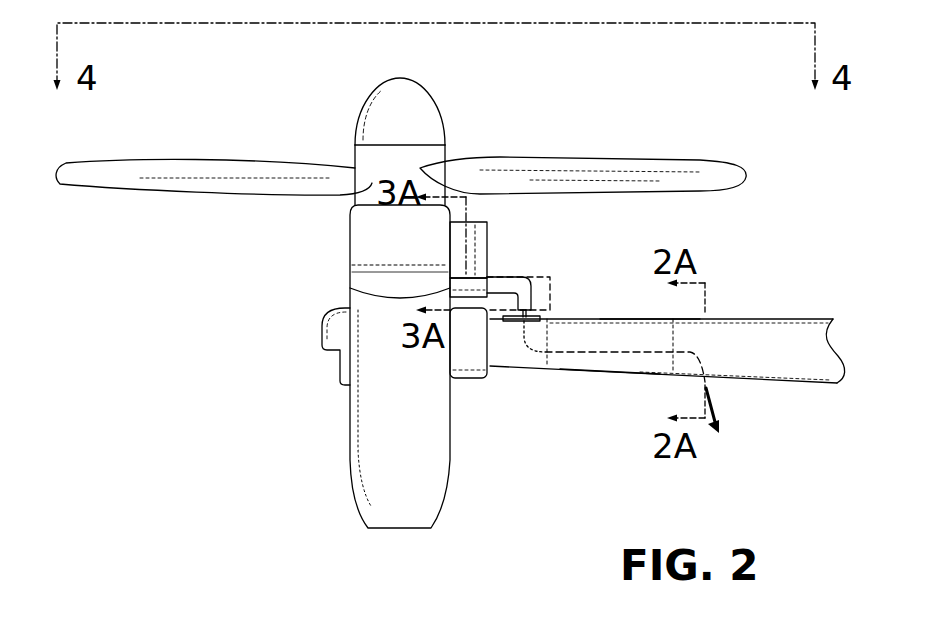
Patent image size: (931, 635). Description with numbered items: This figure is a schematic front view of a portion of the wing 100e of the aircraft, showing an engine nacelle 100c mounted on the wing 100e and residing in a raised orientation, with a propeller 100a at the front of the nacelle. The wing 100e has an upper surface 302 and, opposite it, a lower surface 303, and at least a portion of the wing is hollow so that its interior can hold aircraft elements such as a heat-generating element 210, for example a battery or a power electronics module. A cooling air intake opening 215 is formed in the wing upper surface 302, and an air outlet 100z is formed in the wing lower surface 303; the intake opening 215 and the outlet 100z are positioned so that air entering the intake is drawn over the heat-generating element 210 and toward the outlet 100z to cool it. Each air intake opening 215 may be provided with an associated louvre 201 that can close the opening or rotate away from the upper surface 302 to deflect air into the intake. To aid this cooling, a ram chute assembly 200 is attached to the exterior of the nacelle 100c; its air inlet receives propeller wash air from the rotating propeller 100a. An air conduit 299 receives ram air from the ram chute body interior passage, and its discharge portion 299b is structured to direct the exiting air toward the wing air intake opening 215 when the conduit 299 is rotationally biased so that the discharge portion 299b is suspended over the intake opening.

The propeller 100a is at (416, 105).
The engine nacelle 100c is at (372, 452).
The wing 100e is at (694, 352).
The air outlet 100z is at (708, 385).
The ram chute assembly 200 is at (496, 235).
The air conduit 299 is at (508, 276).
The discharge portion 299b is at (528, 302).
The heat-generating element 210 is at (612, 330).
The cooling air intake opening 215 is at (503, 383).
The louvre 201 is at (512, 323).
The upper surface 302 is at (752, 319).
The lower surface 303 is at (606, 373).